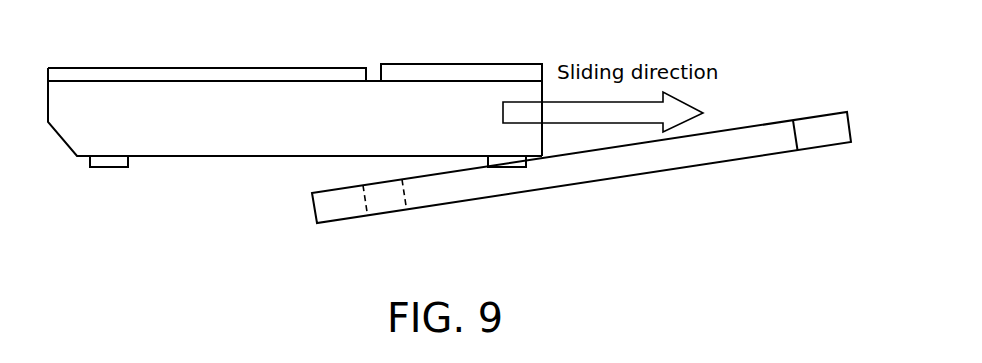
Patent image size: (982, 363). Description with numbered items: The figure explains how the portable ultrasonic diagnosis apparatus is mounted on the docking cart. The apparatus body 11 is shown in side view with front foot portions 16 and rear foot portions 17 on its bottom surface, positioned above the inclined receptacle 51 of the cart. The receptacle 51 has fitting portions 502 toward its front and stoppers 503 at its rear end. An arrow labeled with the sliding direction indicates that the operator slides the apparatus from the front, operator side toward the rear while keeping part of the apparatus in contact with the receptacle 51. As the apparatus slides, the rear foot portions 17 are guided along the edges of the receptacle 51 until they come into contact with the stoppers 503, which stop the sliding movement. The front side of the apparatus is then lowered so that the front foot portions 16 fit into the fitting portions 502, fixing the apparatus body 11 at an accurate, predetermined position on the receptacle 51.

The apparatus body 11 is at (371, 97).
The front foot portions 16 is at (108, 168).
The rear foot portions 17 is at (507, 168).
The receptacle 51 is at (647, 162).
The fitting portions 502 is at (383, 213).
The stoppers 503 is at (824, 140).